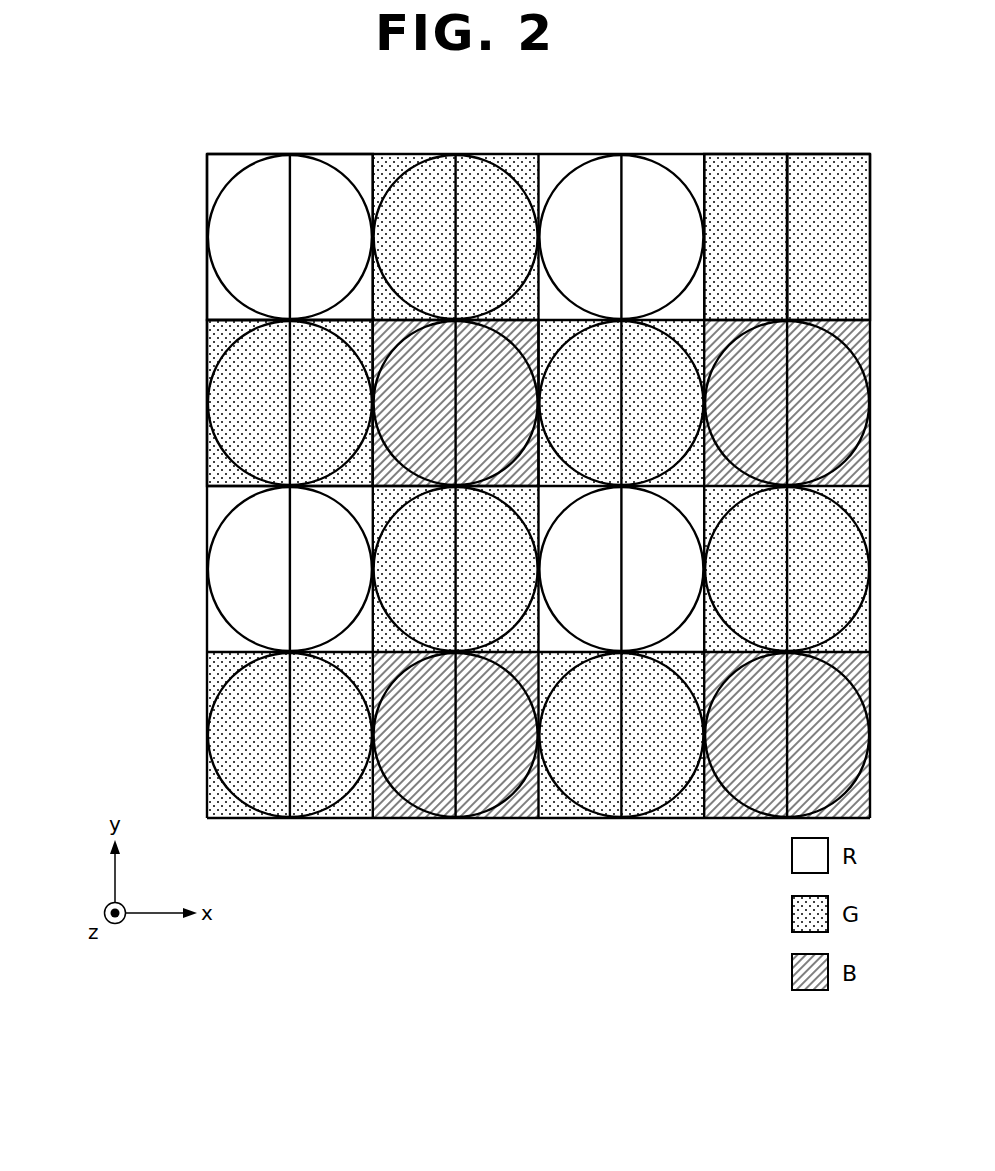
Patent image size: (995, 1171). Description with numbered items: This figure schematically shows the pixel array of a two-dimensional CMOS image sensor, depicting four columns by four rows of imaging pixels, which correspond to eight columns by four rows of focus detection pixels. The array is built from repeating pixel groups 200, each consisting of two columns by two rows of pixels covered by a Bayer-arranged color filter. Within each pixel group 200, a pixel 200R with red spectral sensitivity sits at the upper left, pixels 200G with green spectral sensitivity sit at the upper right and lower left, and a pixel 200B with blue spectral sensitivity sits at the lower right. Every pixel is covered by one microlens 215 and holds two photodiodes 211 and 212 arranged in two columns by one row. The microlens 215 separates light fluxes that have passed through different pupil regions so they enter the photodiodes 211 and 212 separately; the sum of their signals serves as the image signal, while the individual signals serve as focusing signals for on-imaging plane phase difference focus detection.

The pixel group 200 is at (97, 222).
The pixel having R spectral sensitivity 200R is at (216, 242).
The pixel having G spectral sensitivity 200G is at (236, 355).
The pixel having B spectral sensitivity 200B is at (385, 409).
The photodiode 211 is at (752, 183).
The photodiode 212 is at (808, 183).
The microlens 215 is at (245, 162).